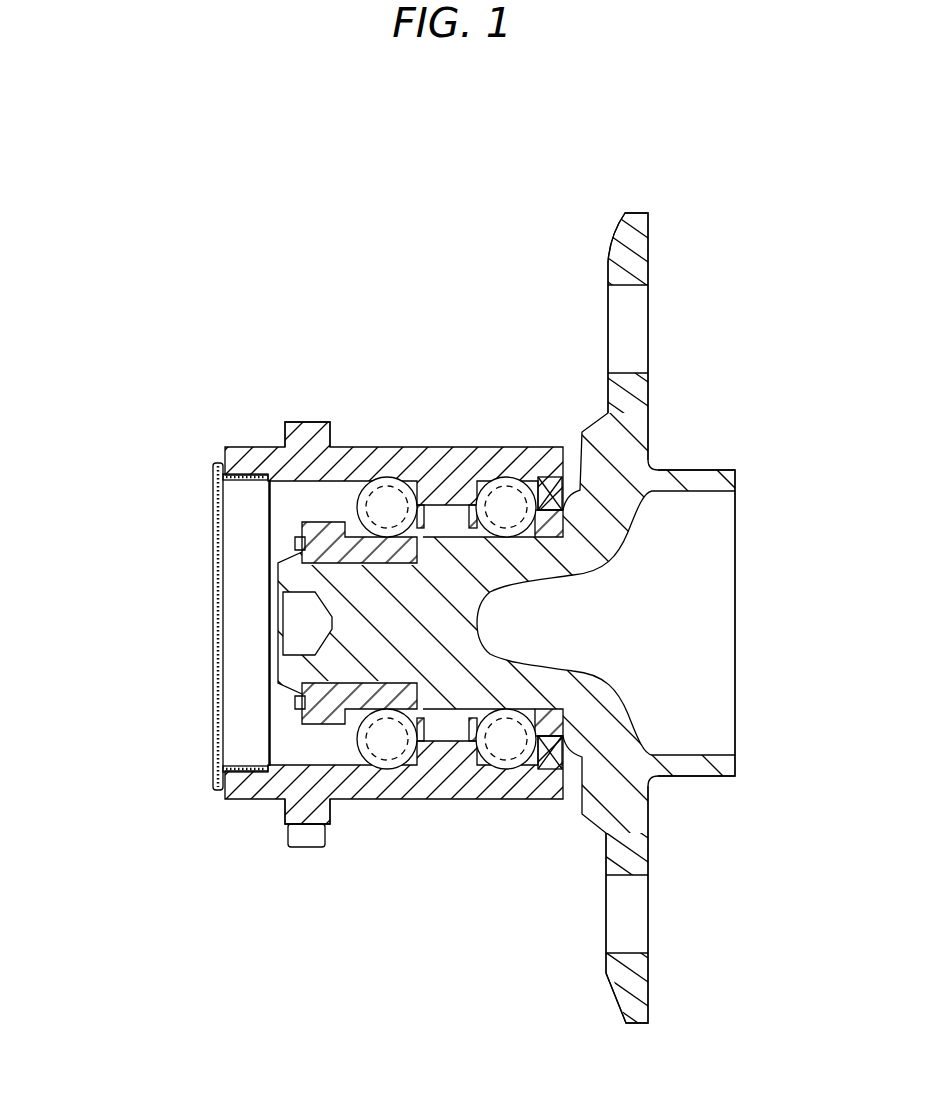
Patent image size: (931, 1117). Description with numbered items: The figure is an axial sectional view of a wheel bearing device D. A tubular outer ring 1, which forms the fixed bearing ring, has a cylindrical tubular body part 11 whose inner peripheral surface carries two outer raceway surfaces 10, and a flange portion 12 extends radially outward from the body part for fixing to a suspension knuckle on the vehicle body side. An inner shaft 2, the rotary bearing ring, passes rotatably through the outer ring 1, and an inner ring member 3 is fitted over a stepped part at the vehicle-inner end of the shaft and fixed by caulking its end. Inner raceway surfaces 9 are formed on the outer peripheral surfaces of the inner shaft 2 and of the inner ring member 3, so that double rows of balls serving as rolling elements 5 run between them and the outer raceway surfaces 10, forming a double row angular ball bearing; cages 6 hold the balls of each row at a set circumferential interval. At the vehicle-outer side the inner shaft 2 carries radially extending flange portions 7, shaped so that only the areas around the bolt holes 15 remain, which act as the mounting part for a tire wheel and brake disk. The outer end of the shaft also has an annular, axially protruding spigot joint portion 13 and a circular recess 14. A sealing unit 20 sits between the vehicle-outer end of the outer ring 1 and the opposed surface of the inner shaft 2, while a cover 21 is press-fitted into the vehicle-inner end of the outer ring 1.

The bearing device D is at (285, 327).
The outer ring 1 is at (418, 437).
The inner shaft 2 is at (450, 637).
The inner ring member 3 is at (318, 553).
The rolling elements 5 is at (386, 480).
The cages 6 is at (420, 502).
The flange portions 7 is at (637, 390).
The inner raceway surfaces 9 is at (345, 508).
The outer raceway surfaces 10 is at (373, 478).
The tubular body part 11 is at (455, 447).
The flange portion 12 is at (300, 432).
The spigot joint portion 13 is at (723, 470).
The recess 14 is at (565, 605).
The bolt holes 15 is at (627, 326).
The sealing unit 20 is at (550, 476).
The cover 21 is at (210, 653).